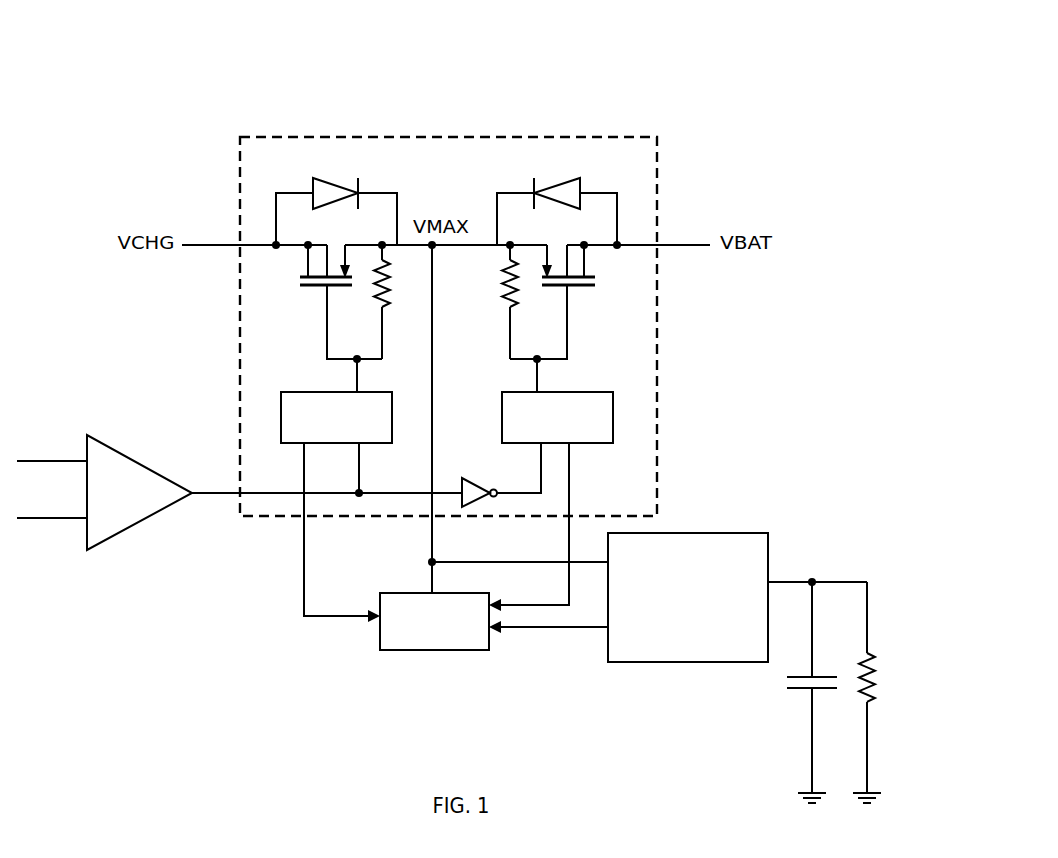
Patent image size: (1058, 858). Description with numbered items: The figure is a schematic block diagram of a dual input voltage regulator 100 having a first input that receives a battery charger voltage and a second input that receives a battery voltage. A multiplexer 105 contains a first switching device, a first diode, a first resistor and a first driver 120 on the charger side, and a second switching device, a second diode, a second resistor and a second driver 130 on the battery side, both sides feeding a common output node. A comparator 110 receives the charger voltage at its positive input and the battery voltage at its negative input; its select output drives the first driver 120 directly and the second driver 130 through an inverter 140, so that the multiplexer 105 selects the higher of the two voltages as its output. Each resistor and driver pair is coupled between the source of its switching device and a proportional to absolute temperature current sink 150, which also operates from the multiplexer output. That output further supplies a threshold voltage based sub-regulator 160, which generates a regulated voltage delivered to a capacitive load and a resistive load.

The dual input voltage regulator 100 is at (695, 54).
The multiplexer 105 is at (493, 170).
The comparator 110 is at (111, 514).
The first driver 120 is at (319, 439).
The second driver 130 is at (539, 439).
The inverter 140 is at (470, 478).
The current sink 150 is at (416, 640).
The Vt-based sub-regulator 160 is at (669, 656).